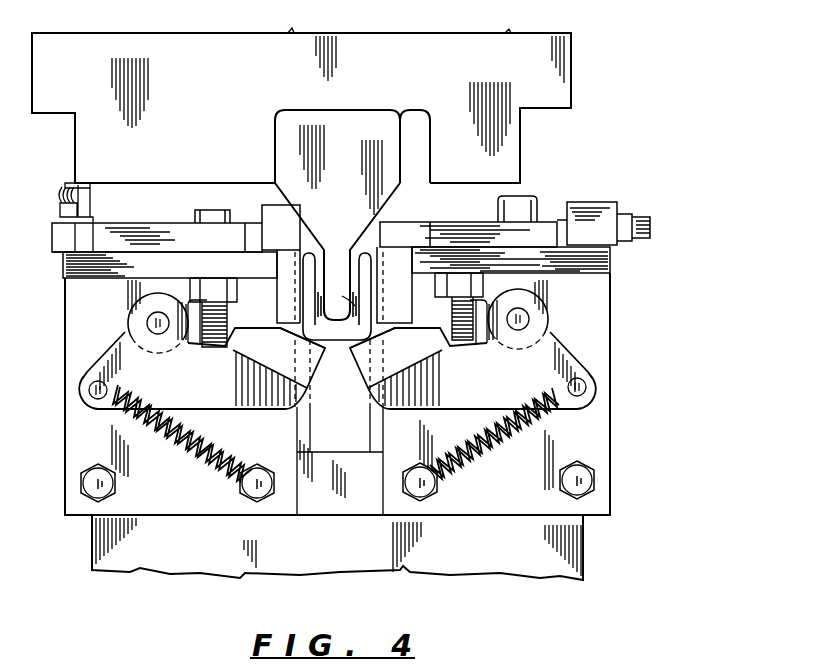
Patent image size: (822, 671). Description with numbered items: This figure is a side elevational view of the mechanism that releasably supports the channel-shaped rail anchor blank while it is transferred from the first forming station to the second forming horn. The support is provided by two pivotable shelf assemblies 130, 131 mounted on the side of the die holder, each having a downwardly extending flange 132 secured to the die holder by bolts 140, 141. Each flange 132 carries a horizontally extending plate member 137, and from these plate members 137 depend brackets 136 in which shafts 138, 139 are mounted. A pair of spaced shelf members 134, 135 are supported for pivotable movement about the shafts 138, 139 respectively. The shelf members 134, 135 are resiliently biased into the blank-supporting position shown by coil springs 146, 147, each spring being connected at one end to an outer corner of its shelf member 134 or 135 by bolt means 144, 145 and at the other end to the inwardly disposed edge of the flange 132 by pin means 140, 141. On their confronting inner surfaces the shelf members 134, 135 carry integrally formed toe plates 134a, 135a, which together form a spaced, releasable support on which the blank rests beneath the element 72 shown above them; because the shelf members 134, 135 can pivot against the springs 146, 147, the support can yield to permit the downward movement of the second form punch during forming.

The nozzle 72 is at (378, 135).
The pivotable shelf assembly 130 is at (618, 370).
The pivotable shelf assembly 131 is at (91, 365).
The downwardly extending flange 132 is at (75, 455).
The shelf member 134 is at (473, 368).
The toe plate 134a is at (353, 348).
The shelf member 135 is at (202, 368).
The toe plate 135a is at (323, 350).
The bracket 136 is at (128, 285).
The horizontally extending plate member 137 is at (607, 257).
The shaft 138 is at (527, 320).
The shaft 139 is at (150, 323).
The bolt / pin means 140 is at (432, 490).
The bolt / pin means 141 is at (88, 500).
The bolt means 144 is at (583, 389).
The bolt means 145 is at (90, 393).
The coil spring 146 is at (503, 450).
The coil spring 147 is at (182, 439).